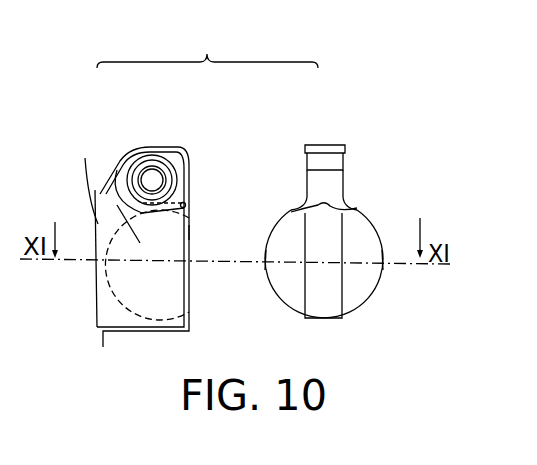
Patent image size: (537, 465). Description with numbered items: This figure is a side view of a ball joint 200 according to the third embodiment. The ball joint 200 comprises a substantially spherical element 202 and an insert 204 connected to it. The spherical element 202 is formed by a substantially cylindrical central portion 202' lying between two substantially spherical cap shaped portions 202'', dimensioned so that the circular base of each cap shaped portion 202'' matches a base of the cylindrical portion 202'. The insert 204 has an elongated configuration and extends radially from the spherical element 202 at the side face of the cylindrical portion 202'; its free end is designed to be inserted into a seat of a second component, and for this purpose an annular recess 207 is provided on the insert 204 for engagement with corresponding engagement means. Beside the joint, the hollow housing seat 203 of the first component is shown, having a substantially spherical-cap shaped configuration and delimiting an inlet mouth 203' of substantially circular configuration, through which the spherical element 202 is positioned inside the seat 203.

The ball joint 200 is at (207, 46).
The hollow housing seat 203 is at (128, 221).
The inlet mouth 203' is at (218, 197).
The annular recess 207 is at (306, 161).
The insert 204 is at (353, 200).
The spherical element 202 is at (377, 281).
The substantially cylindrical central portion 202' is at (338, 284).
The substantially spherical cap shaped portions 202'' is at (339, 284).